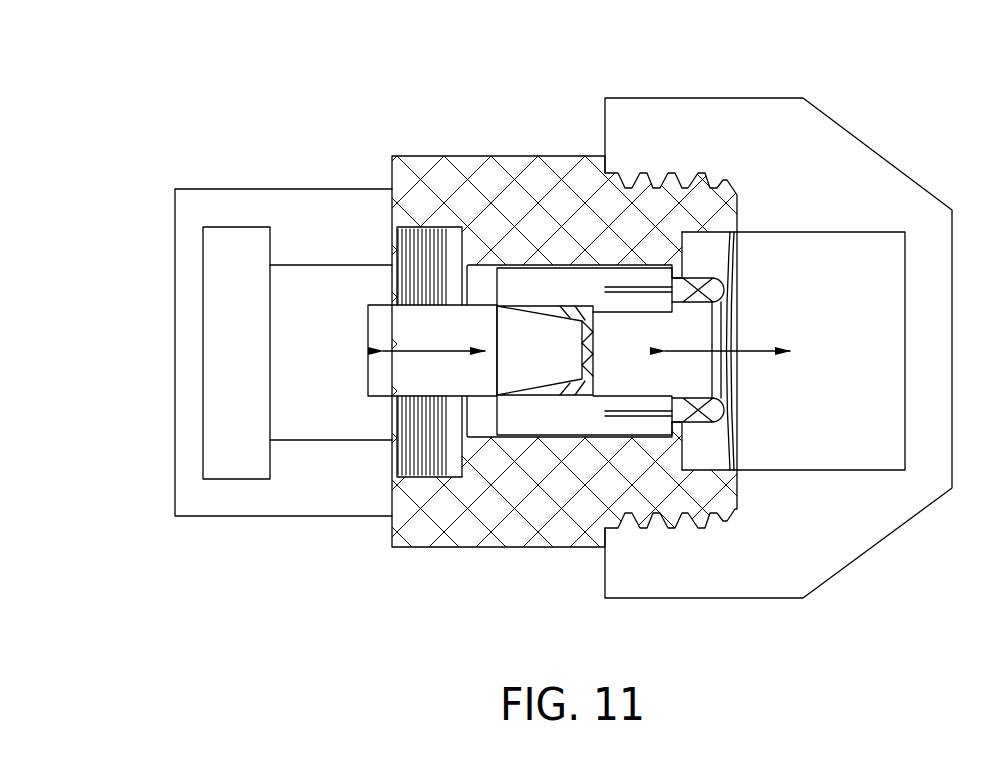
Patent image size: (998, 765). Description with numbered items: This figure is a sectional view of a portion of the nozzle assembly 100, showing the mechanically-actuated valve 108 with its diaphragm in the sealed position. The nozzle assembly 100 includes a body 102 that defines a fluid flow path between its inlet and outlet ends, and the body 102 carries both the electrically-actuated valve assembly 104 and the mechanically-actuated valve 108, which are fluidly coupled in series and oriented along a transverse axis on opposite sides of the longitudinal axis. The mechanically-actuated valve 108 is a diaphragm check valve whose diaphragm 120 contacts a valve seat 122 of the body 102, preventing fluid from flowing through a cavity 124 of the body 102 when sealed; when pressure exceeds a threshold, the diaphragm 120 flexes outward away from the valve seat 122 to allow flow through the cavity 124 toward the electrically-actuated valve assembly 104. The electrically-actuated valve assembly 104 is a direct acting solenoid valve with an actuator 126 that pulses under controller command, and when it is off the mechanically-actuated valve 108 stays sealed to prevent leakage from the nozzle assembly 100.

The nozzle assembly 100 is at (147, 145).
The body 102 is at (470, 173).
The electrically-actuated valve assembly 104 is at (185, 524).
The mechanically-actuated valve 108 is at (852, 102).
The diaphragm 120 is at (734, 445).
The valve seat 122 is at (715, 425).
The cavity 124 is at (693, 368).
The actuator 126 is at (187, 288).